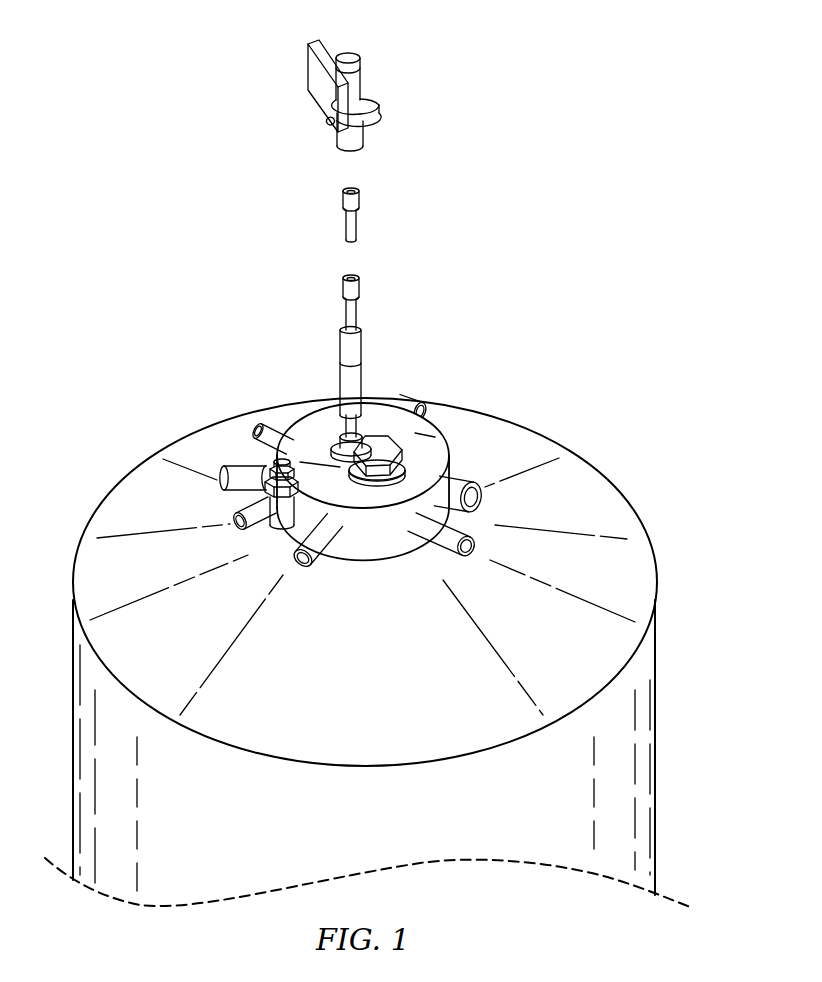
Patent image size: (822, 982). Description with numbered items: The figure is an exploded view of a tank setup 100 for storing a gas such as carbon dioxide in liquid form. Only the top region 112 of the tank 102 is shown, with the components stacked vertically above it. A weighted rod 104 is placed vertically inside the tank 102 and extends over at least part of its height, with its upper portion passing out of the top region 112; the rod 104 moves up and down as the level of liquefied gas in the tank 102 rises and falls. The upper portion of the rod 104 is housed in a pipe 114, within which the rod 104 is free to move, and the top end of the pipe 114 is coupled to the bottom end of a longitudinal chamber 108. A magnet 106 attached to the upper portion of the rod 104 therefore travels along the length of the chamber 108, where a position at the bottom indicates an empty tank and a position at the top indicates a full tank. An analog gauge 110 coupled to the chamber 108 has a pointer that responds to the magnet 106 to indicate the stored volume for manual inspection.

The tank setup 100 is at (593, 144).
The tank 102 is at (367, 652).
The rod 104 is at (360, 313).
The magnet 106 is at (360, 217).
The longitudinal chamber 108 is at (364, 60).
The analog gauge 110 is at (306, 62).
The top region 112 is at (362, 574).
The pipe 114 is at (362, 343).